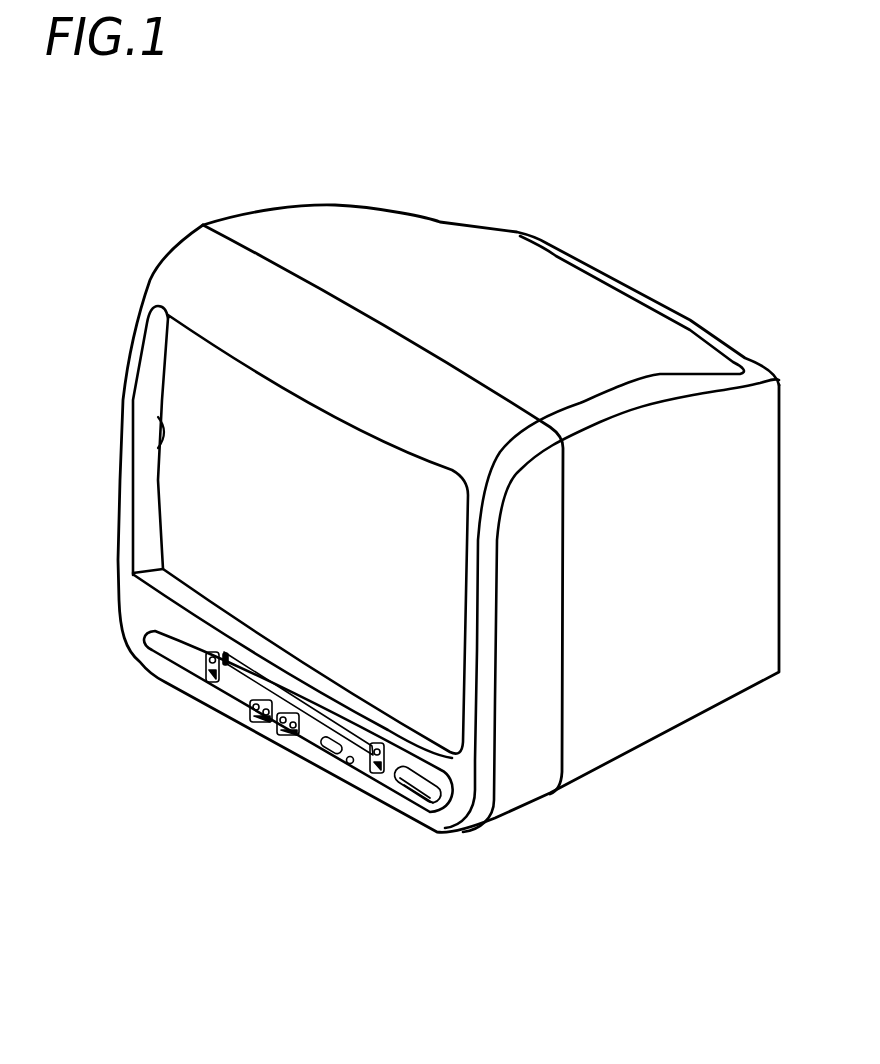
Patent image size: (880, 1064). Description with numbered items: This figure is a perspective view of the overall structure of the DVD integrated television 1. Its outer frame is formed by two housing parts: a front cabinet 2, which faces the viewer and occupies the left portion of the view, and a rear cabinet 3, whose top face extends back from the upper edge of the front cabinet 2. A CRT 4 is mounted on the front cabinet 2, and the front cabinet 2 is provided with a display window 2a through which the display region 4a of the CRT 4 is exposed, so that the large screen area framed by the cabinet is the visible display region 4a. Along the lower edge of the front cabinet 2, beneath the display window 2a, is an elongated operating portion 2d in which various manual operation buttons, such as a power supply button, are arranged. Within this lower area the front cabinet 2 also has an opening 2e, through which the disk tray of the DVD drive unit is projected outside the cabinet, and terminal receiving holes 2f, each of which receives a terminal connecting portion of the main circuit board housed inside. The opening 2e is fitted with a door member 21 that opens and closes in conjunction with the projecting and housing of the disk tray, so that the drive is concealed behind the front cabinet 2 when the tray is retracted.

The DVD integrated television 1 is at (137, 238).
The front cabinet 2 is at (210, 288).
The display window 2a is at (157, 447).
The operating portion 2d is at (180, 653).
The opening 2e is at (231, 676).
The terminal receiving holes 2f is at (420, 798).
The rear cabinet 3 is at (560, 292).
The CRT 4 is at (225, 510).
The display region 4a is at (232, 574).
The door member 21 is at (297, 703).